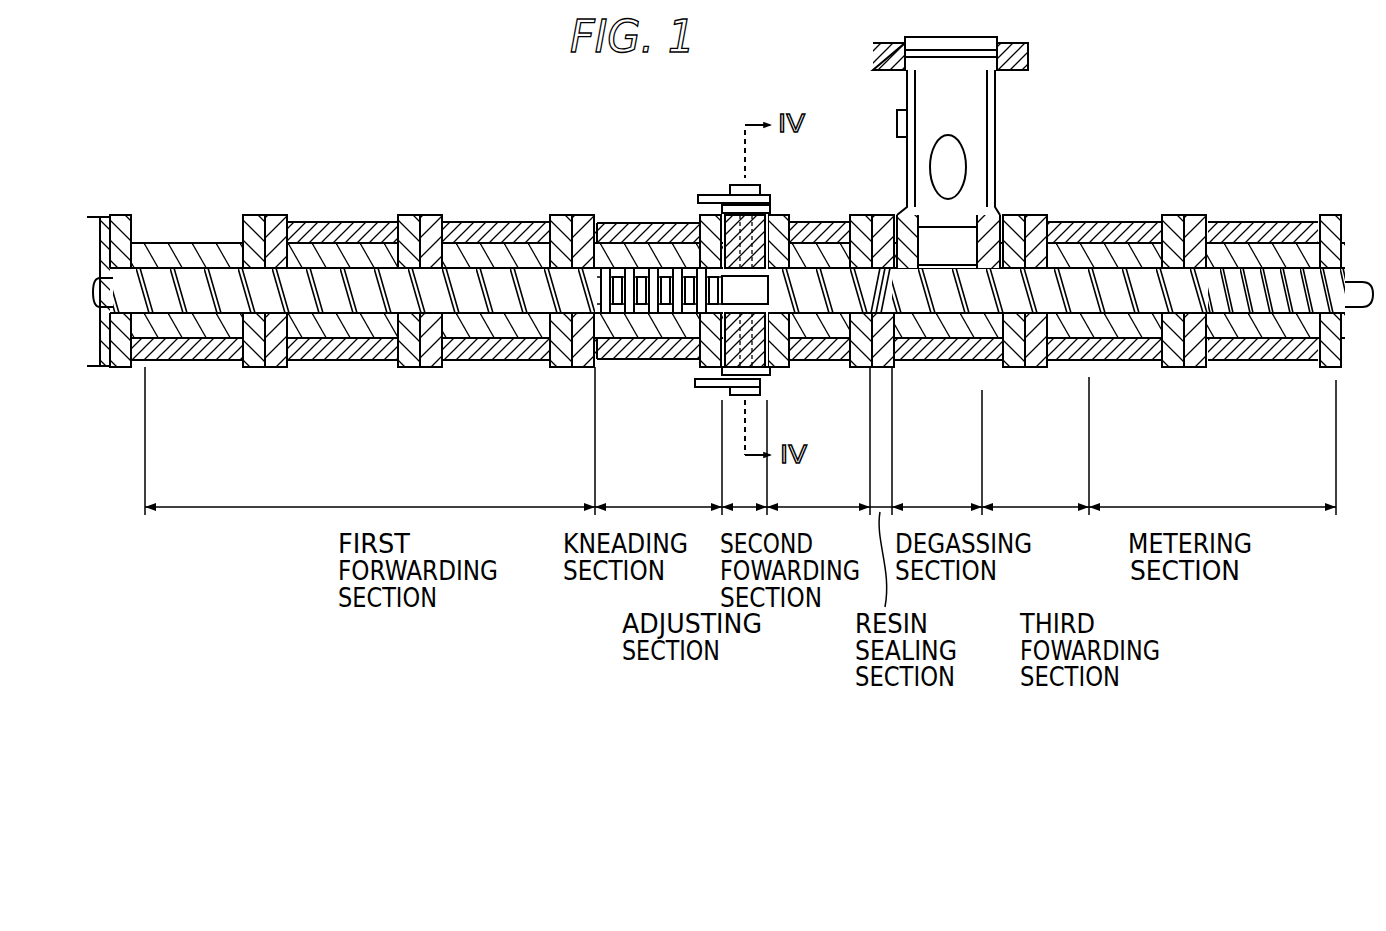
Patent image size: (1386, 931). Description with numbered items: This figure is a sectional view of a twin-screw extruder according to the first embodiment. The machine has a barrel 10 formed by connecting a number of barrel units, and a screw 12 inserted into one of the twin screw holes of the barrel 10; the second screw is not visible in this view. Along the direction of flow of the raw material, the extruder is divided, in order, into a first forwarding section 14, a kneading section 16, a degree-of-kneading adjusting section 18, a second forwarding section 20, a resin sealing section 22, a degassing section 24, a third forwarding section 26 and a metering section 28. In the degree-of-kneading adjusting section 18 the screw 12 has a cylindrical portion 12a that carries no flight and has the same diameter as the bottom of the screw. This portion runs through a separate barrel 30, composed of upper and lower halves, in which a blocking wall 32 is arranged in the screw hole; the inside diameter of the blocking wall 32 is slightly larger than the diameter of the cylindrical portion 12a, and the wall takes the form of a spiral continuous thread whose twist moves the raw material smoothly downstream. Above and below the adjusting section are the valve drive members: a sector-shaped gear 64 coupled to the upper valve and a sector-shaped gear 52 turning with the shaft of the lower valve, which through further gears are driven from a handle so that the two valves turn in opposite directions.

The barrel 10 is at (272, 216).
The screw 12 is at (318, 318).
The cylindrical portion 12a is at (757, 287).
The first forwarding section 14 is at (346, 532).
The kneading section 16 is at (640, 532).
The degree-of-kneading adjusting section 18 is at (734, 376).
The second forwarding section 20 is at (790, 530).
The resin sealing section 22 is at (880, 507).
The degassing section 24 is at (942, 532).
The third forwarding section 26 is at (1055, 608).
The metering section 28 is at (1190, 532).
The barrel 30 is at (698, 366).
The blocking wall 32 is at (782, 364).
The sector-shaped gear 52 is at (706, 386).
The sector-shaped gear 64 is at (715, 197).